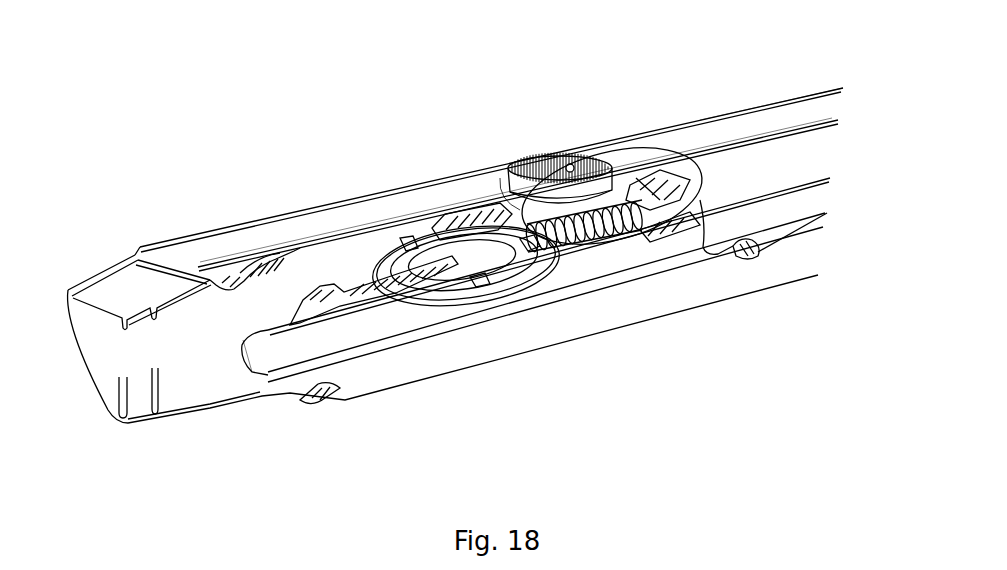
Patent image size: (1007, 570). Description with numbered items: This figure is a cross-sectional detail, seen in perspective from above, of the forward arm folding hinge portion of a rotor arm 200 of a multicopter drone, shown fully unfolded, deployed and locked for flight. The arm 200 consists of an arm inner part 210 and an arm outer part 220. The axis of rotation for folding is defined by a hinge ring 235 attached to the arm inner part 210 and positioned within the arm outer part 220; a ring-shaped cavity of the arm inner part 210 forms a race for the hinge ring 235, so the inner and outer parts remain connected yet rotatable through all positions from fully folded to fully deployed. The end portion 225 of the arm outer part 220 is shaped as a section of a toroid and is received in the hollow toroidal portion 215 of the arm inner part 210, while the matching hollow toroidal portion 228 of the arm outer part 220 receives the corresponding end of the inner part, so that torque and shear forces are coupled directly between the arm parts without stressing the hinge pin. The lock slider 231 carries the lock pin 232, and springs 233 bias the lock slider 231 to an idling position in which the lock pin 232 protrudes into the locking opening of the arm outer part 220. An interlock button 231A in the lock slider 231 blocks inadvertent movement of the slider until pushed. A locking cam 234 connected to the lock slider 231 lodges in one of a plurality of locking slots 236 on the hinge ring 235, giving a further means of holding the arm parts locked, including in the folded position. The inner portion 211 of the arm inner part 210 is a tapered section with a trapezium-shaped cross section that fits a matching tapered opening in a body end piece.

The arm 200 is at (349, 196).
The arm inner part 210 is at (245, 238).
The inner portion of the arm inner part 211 is at (80, 347).
The portion of the arm inner part 215 is at (252, 374).
The arm outer part 220 is at (797, 108).
The end portion of the arm outer part 225 is at (320, 382).
The portion of the arm outer part 228 is at (749, 258).
The lock slider 231 is at (543, 168).
The interlock button 231A is at (570, 166).
The lock pin 232 is at (683, 212).
The springs 233 is at (599, 225).
The locking cam 234 is at (500, 212).
The hinge ring 235 is at (421, 294).
The locking slot 236 is at (528, 246).